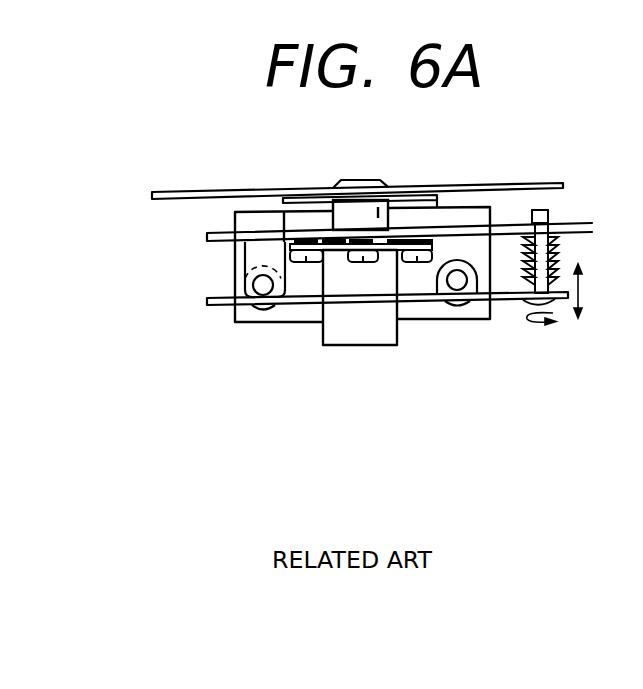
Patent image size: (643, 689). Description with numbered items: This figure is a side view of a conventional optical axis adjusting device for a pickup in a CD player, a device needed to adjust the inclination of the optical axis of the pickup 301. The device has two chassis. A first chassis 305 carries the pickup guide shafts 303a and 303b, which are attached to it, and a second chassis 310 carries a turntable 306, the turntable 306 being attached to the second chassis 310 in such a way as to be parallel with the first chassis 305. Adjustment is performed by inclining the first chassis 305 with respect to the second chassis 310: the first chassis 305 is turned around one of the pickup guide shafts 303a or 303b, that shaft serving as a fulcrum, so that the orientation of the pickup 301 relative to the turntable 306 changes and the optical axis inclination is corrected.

The pickup 301 is at (453, 213).
The pickup guide shaft 303a is at (263, 275).
The pickup guide shaft 303b is at (455, 283).
The first chassis 305 is at (303, 306).
The turntable 306 is at (348, 212).
The second chassis 310 is at (217, 232).